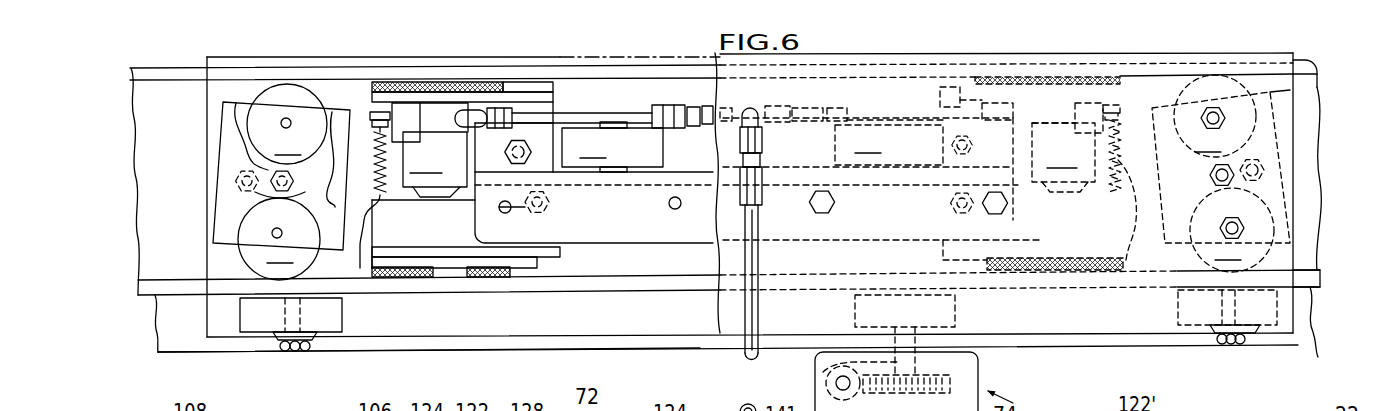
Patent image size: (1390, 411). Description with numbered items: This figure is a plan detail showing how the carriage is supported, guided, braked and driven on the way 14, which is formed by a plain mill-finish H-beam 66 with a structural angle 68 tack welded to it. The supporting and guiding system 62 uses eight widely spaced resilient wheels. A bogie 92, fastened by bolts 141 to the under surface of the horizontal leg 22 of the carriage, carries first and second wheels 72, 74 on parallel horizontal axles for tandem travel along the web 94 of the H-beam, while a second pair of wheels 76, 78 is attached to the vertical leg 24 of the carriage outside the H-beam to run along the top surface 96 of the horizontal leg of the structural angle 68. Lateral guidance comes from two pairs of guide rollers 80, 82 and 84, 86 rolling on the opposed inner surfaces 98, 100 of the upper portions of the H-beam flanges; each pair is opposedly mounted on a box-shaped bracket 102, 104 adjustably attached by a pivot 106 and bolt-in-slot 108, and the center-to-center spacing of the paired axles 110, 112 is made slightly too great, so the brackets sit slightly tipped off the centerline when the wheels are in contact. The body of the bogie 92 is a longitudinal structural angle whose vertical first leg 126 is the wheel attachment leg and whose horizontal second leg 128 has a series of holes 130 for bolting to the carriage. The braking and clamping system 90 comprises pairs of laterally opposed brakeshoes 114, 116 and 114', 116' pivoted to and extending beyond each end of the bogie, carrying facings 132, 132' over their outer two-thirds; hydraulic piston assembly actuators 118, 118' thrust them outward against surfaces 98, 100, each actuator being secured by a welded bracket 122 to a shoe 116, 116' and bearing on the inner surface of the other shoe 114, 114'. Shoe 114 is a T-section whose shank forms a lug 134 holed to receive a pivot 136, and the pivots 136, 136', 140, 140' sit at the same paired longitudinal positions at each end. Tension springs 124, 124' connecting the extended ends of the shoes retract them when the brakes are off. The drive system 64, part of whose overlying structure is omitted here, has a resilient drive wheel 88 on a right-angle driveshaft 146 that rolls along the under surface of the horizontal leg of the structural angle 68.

The way 14 is at (1305, 333).
The horizontal leg of the carriage 22 is at (1287, 115).
The vertical leg of the carriage 24 is at (1150, 343).
The supporting and guiding system 62 is at (570, 283).
The carriage drive system 64 is at (1040, 397).
The H-beam 66 is at (153, 256).
The structural angle 68 is at (153, 322).
The first wheel 72 is at (612, 147).
The second wheel 74 is at (868, 260).
The wheel of second pair 76 is at (352, 318).
The wheel of second pair 78 is at (1260, 327).
The guide roller 80 is at (279, 239).
The guide roller 82 is at (287, 124).
The guide roller 84 is at (1232, 230).
The guide roller 86 is at (1219, 130).
The drive wheel 88 is at (953, 318).
The braking and clamping system 90 is at (662, 283).
The bogie 92 is at (543, 230).
The web of the H-beam 94 is at (1303, 193).
The top surface of the structural angle leg 96 is at (180, 328).
The inner surface of H-beam flange 98 is at (1311, 291).
The inner surface of H-beam flange 100 is at (1317, 82).
The box-shaped bracket 102 is at (223, 145).
The box-shaped bracket 104 is at (1272, 82).
The pivot 106 is at (275, 187).
The bolt-in-slot 108 is at (240, 183).
The axle 110 is at (271, 236).
The axle 112 is at (280, 122).
The brakeshoe 114 is at (462, 210).
The brakeshoe 114' is at (1175, 262).
The brakeshoe 116 is at (584, 107).
The brakeshoe 116' is at (866, 102).
The hydraulic piston assembly actuator 118 is at (423, 151).
The hydraulic piston assembly actuator 118' is at (1067, 147).
The bracket 122 is at (428, 128).
The tension spring 124 is at (588, 234).
The tension spring 124' is at (1142, 281).
The first leg of the bogie 126 is at (565, 177).
The second leg of the bogie 128 is at (648, 240).
The holes 130 is at (669, 205).
The facing 132 is at (535, 234).
The facing 132' is at (1033, 196).
The lug 134 is at (368, 243).
The brakeshoe pivot 136 is at (558, 187).
The brakeshoe pivot 136' is at (881, 188).
The brakeshoe pivot 140 is at (585, 80).
The brakeshoe pivot 140' is at (997, 54).
The bolts 141 is at (834, 208).
The right-angle driveshaft 146 is at (822, 372).